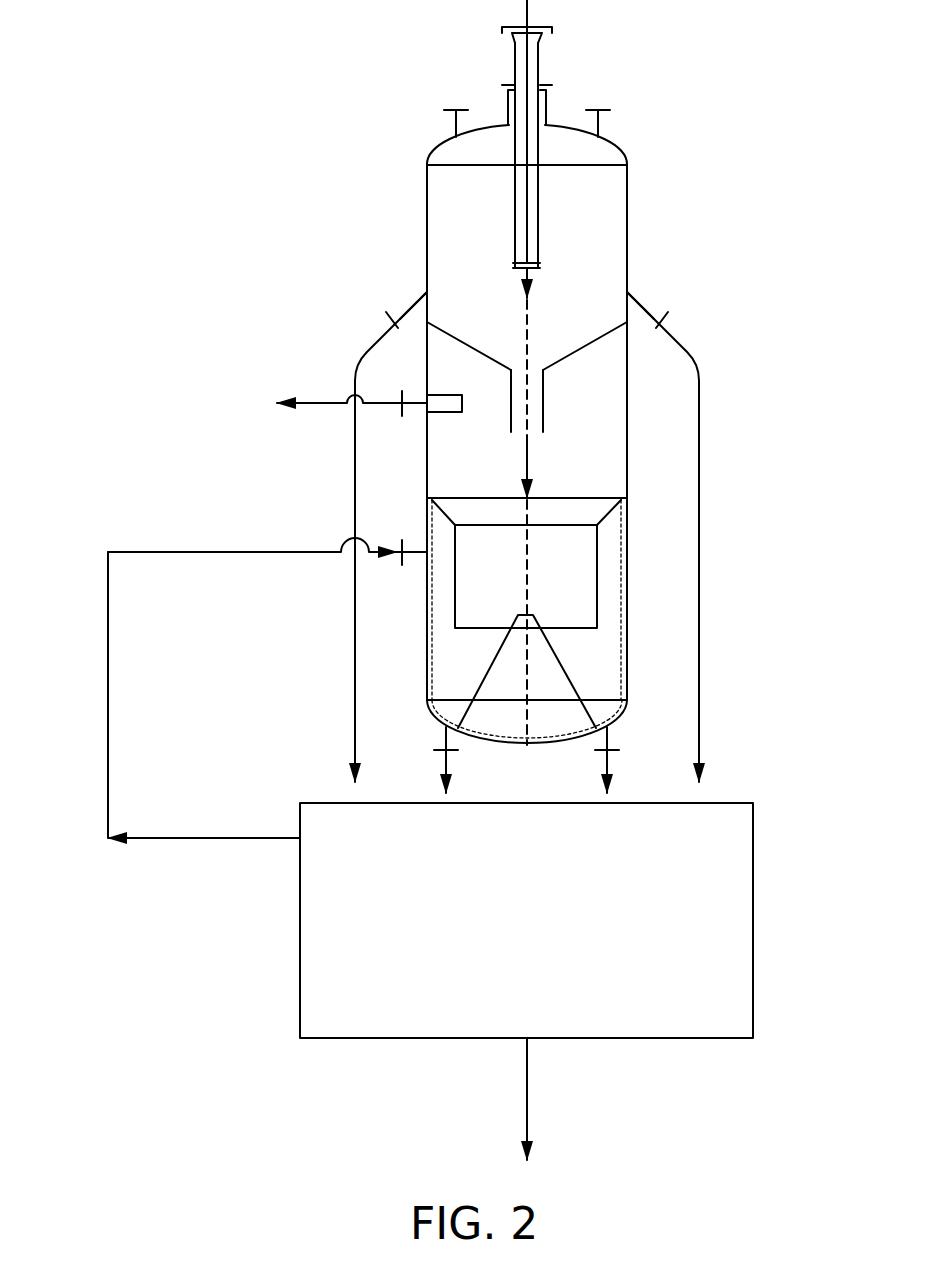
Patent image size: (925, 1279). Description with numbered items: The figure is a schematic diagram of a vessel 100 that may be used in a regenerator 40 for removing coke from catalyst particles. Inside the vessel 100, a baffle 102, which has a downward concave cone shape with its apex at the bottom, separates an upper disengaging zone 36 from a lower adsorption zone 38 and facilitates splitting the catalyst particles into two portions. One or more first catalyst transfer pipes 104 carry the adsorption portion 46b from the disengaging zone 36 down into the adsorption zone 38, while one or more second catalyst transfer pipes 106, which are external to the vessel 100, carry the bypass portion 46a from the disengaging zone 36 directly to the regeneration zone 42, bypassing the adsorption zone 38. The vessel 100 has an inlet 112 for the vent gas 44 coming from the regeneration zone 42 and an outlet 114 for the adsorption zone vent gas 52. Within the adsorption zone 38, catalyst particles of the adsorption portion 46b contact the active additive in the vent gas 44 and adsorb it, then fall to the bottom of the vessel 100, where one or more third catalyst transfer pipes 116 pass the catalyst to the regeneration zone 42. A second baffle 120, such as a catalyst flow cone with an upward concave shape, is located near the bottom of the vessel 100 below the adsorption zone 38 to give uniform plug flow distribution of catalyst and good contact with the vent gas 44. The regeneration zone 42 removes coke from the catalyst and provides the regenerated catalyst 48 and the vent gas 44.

The regenerator 40 is at (734, 78).
The disengaging zone 36 is at (473, 295).
The adsorption zone 38 is at (545, 580).
The regeneration zone 42 is at (753, 920).
The vent gas 44 is at (107, 643).
The bypass portion 46a is at (362, 353).
The adsorption portion 46b is at (528, 458).
The regenerated catalyst 48 is at (528, 1088).
The adsorption zone vent gas 52 is at (345, 410).
The vessel 100 is at (427, 195).
The baffle 102 is at (583, 343).
The first catalyst transfer pipes 104 is at (543, 400).
The second catalyst transfer pipes 106 is at (408, 298).
The inlet 112 is at (415, 555).
The outlet 114 is at (418, 408).
The third catalyst transfer pipes 116 is at (446, 740).
The second baffle 120 is at (567, 672).